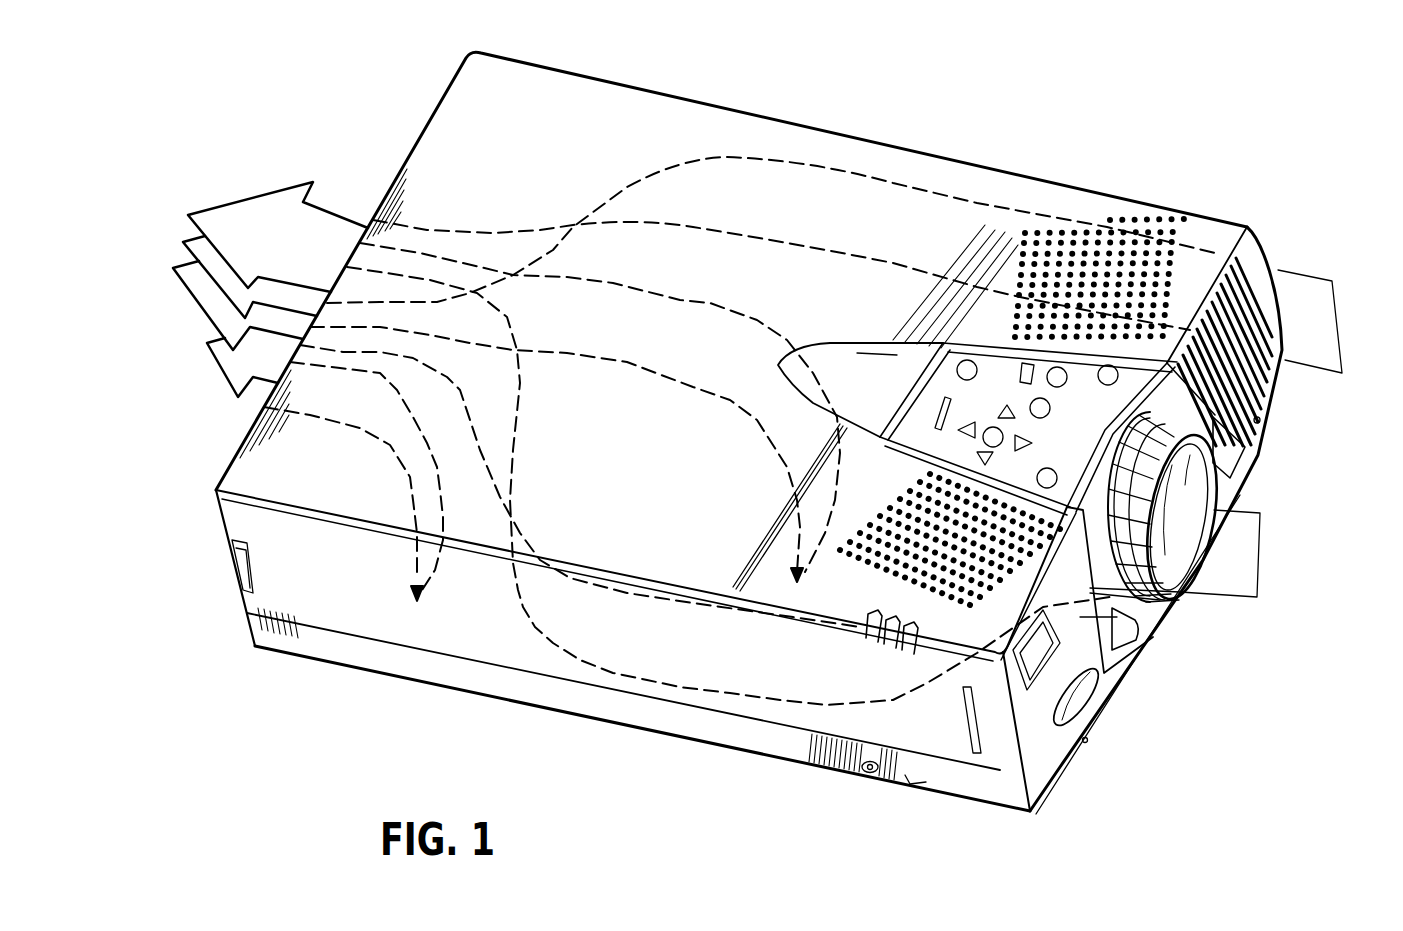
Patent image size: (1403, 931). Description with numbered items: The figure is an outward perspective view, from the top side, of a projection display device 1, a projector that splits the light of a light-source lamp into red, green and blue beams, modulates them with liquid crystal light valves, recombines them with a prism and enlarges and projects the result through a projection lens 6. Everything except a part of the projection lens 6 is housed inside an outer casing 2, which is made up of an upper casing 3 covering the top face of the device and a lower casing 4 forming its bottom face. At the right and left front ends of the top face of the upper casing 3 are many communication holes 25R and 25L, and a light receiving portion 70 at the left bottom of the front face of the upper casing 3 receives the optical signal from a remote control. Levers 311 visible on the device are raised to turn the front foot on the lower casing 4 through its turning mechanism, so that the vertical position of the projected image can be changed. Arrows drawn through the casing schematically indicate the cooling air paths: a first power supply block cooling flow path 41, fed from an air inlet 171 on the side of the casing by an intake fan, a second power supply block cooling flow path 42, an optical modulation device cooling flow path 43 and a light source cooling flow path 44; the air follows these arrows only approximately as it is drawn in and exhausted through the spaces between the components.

The projection display device 1 is at (345, 128).
The outer casing 2 is at (207, 604).
The upper casing 3 is at (222, 534).
The lower casing 4 is at (255, 648).
The projection lens 6 is at (1173, 530).
The communication holes 25L is at (1110, 223).
The communication holes 25R is at (893, 517).
The first power supply block cooling flow path 41 is at (795, 178).
The second power supply block cooling flow path 42 is at (720, 663).
The optical modulation device cooling flow path 43 is at (733, 335).
The light source cooling flow path 44 is at (405, 473).
The light receiving portion 70 is at (1077, 700).
The air inlet 171 is at (1270, 297).
The levers 311 is at (1243, 467).